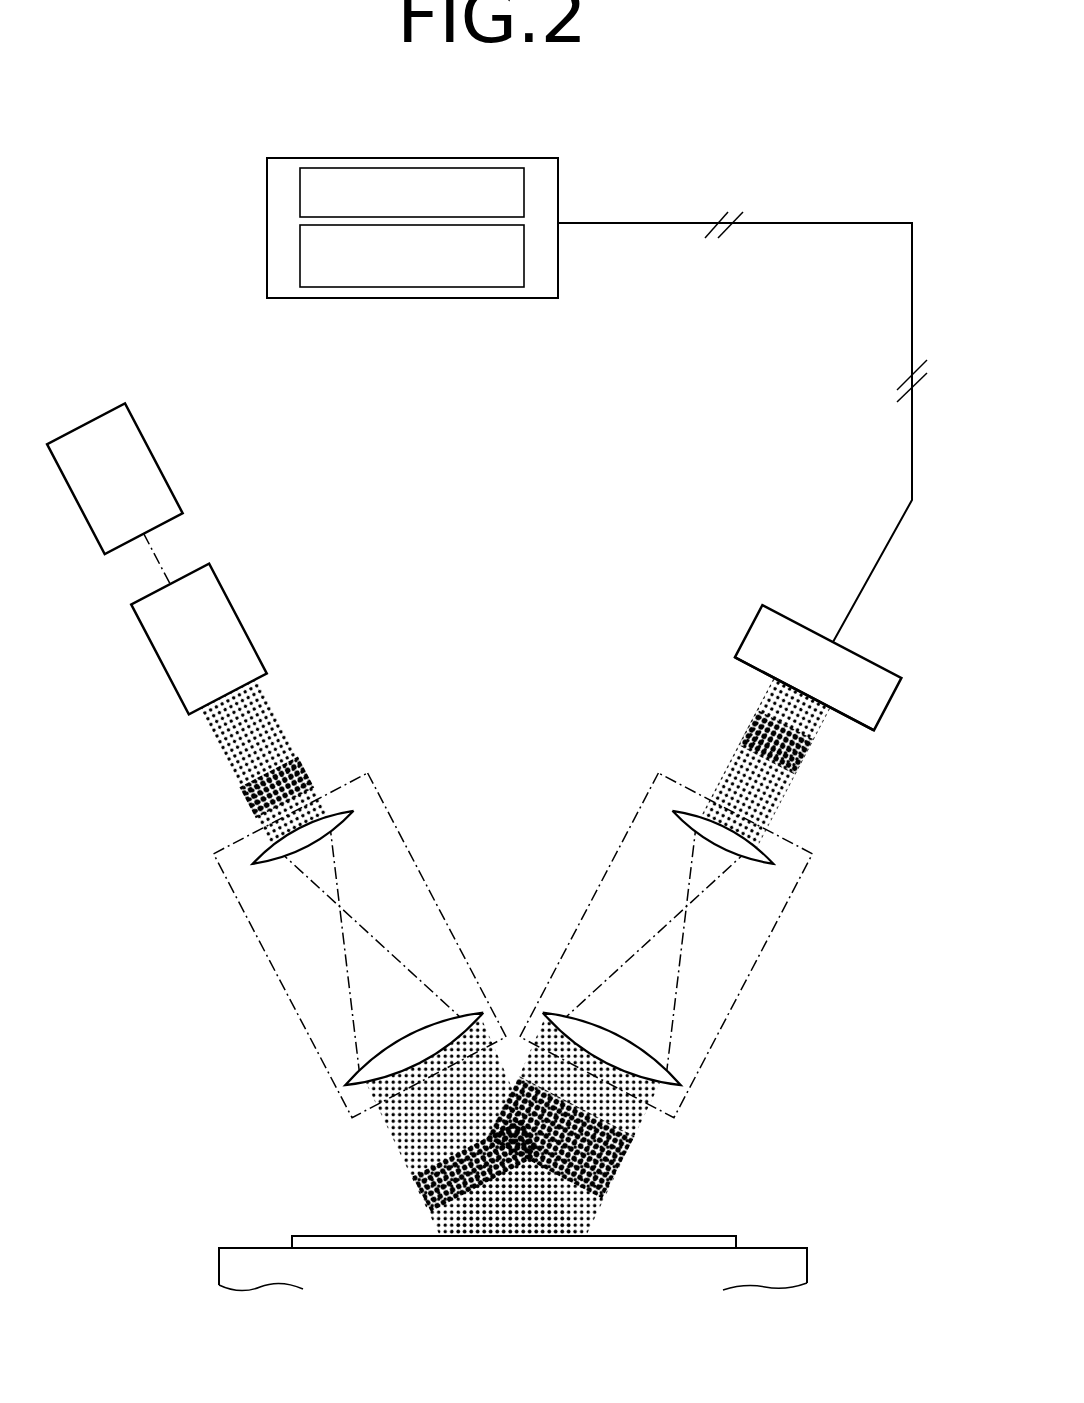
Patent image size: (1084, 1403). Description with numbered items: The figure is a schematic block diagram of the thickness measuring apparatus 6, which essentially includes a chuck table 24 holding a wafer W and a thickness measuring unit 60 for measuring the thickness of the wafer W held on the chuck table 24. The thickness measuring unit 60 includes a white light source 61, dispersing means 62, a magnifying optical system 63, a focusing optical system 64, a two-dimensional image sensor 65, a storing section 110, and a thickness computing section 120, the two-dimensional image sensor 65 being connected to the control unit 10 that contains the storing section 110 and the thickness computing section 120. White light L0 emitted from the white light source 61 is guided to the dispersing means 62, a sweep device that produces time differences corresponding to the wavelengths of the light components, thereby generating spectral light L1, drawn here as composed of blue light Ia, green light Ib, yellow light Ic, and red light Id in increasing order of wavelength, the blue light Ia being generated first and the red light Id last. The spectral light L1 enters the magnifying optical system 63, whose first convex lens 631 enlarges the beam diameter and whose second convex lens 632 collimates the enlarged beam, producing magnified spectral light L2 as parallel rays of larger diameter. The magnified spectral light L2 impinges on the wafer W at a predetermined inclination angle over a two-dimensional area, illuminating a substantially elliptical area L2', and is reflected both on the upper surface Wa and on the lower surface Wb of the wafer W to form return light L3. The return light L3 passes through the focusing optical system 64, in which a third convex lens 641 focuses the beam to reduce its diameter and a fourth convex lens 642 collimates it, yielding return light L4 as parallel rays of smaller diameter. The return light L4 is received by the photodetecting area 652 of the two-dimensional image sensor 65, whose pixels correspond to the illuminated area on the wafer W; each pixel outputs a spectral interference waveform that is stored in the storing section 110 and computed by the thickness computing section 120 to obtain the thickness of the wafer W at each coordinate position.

The thickness measuring apparatus 6 is at (190, 312).
The control unit 10 is at (518, 158).
The storing section 110 is at (342, 168).
The thickness computing section 120 is at (346, 288).
The chuck table 24 is at (240, 1268).
The thickness measuring unit 60 is at (190, 757).
The white light source 61 is at (152, 447).
The dispersing means 62 is at (240, 618).
The magnifying optical system 63 is at (378, 779).
The first convex lens 631 is at (343, 823).
The second convex lens 632 is at (357, 1066).
The focusing optical system 64 is at (812, 847).
The third convex lens 641 is at (690, 1072).
The fourth convex lens 642 is at (760, 857).
The two-dimensional image sensor 65 is at (870, 697).
The photodetecting area 652 is at (780, 690).
The wafer W is at (320, 1230).
The upper surface of the wafer Wa is at (668, 1236).
The lower surface of the wafer Wb is at (704, 1249).
The white light L0 is at (190, 550).
The spectral light L1 is at (356, 643).
The magnified spectral light L2 is at (447, 1125).
The substantially elliptical area L2' is at (509, 1284).
The return light L3 is at (625, 1147).
The return light L4 is at (765, 700).
The blue light Ia is at (312, 785).
The green light Ib is at (295, 755).
The yellow light Ic is at (280, 723).
The red light Id is at (262, 693).